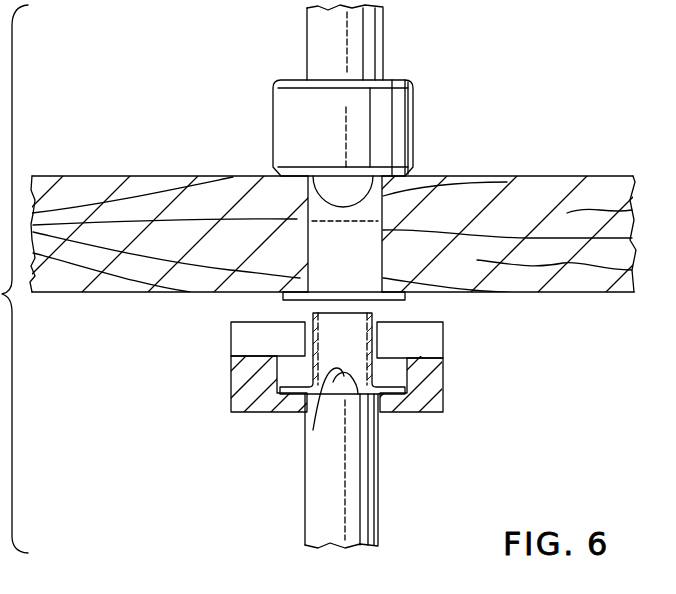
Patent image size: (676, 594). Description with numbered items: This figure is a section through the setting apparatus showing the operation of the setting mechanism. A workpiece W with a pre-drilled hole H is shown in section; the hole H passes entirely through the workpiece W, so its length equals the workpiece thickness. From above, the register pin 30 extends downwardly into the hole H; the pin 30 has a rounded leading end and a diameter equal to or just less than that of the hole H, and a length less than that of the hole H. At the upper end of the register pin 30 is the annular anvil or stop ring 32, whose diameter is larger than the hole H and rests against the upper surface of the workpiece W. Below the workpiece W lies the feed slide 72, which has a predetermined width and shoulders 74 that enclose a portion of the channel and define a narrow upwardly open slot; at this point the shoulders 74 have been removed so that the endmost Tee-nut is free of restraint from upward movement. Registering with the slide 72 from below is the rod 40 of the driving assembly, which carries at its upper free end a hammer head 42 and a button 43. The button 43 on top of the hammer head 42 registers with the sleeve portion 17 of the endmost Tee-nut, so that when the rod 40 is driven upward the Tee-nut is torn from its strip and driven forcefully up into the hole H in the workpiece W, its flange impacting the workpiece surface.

The workpiece W is at (530, 203).
The pre-drilled hole H is at (383, 226).
The register pin 30 is at (307, 214).
The annular anvil or stop ring 32 is at (273, 132).
The shoulders 74 is at (256, 321).
The feed slide 72 is at (257, 368).
The sleeve portion 17 is at (372, 333).
The hammer head 42 is at (376, 403).
The button 43 is at (312, 410).
The rod 40 is at (305, 517).